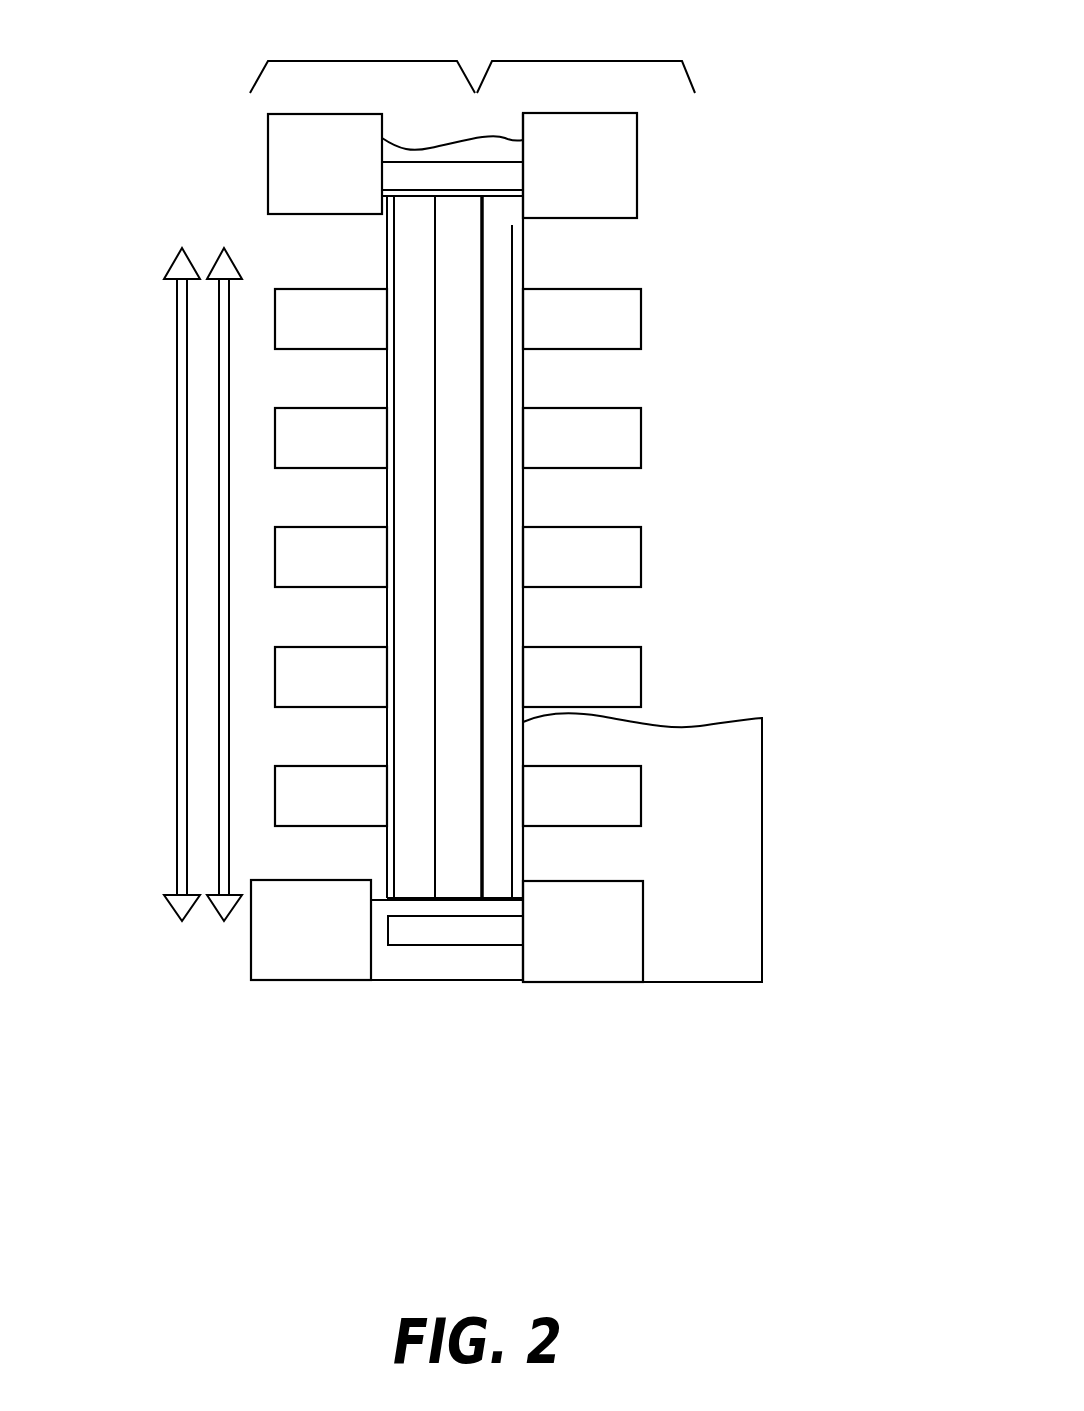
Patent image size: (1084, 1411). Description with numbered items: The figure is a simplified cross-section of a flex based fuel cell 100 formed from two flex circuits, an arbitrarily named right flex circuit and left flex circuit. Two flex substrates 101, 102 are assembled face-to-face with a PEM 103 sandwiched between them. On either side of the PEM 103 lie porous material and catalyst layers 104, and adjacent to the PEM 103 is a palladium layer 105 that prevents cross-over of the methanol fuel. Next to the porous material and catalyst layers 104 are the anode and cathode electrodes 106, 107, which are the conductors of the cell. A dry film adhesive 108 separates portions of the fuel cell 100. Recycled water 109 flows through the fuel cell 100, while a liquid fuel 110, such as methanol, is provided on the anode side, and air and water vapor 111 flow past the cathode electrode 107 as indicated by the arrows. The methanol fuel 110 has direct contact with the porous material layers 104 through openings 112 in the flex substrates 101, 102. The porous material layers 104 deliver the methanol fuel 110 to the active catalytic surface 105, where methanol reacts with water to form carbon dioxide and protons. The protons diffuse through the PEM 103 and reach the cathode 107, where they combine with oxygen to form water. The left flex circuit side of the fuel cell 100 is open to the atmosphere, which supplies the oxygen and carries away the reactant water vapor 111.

The flex based fuel cell 100 is at (932, 210).
The flex substrate 101 is at (386, 165).
The flex substrate 102 is at (638, 207).
The PEM 103 is at (447, 714).
The porous material and catalyst layers 104 is at (408, 565).
The palladium layer 105 is at (487, 263).
The anode electrode 106 is at (533, 625).
The cathode electrode 107 is at (387, 272).
The dry film adhesive 108 is at (447, 190).
The recycled water 109 is at (397, 965).
The liquid fuel 110 is at (738, 802).
The air and water vapor 111 is at (160, 627).
The openings 112 is at (626, 375).